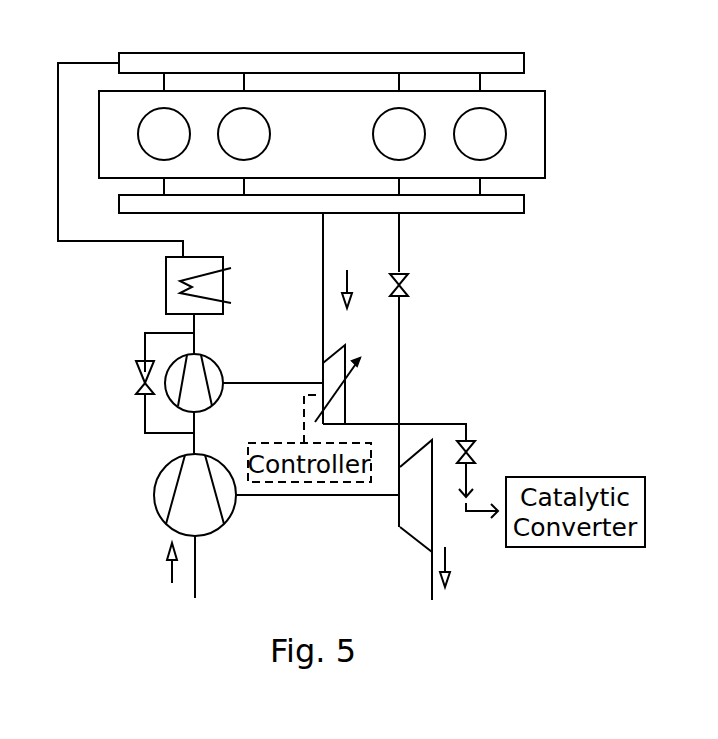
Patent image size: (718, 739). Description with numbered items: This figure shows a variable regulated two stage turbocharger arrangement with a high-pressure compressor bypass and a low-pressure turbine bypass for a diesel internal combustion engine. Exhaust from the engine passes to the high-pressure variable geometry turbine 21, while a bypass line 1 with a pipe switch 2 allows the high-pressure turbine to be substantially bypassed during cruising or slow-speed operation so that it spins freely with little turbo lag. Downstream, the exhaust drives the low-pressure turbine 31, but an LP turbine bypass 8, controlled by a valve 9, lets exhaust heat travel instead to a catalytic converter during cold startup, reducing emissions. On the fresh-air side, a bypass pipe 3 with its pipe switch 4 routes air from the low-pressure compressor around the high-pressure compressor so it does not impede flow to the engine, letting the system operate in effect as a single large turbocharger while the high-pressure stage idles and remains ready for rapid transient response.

The bypass line 1 is at (401, 241).
The pipe switch 2 is at (408, 288).
The bypass pipe 3 is at (155, 332).
The pipe switch 4 is at (132, 383).
The LP turbine bypass 8 is at (448, 424).
The branch valve 9 is at (477, 447).
The high-pressure variable geometry turbine 21 is at (333, 368).
The low-pressure turbine 31 is at (412, 525).